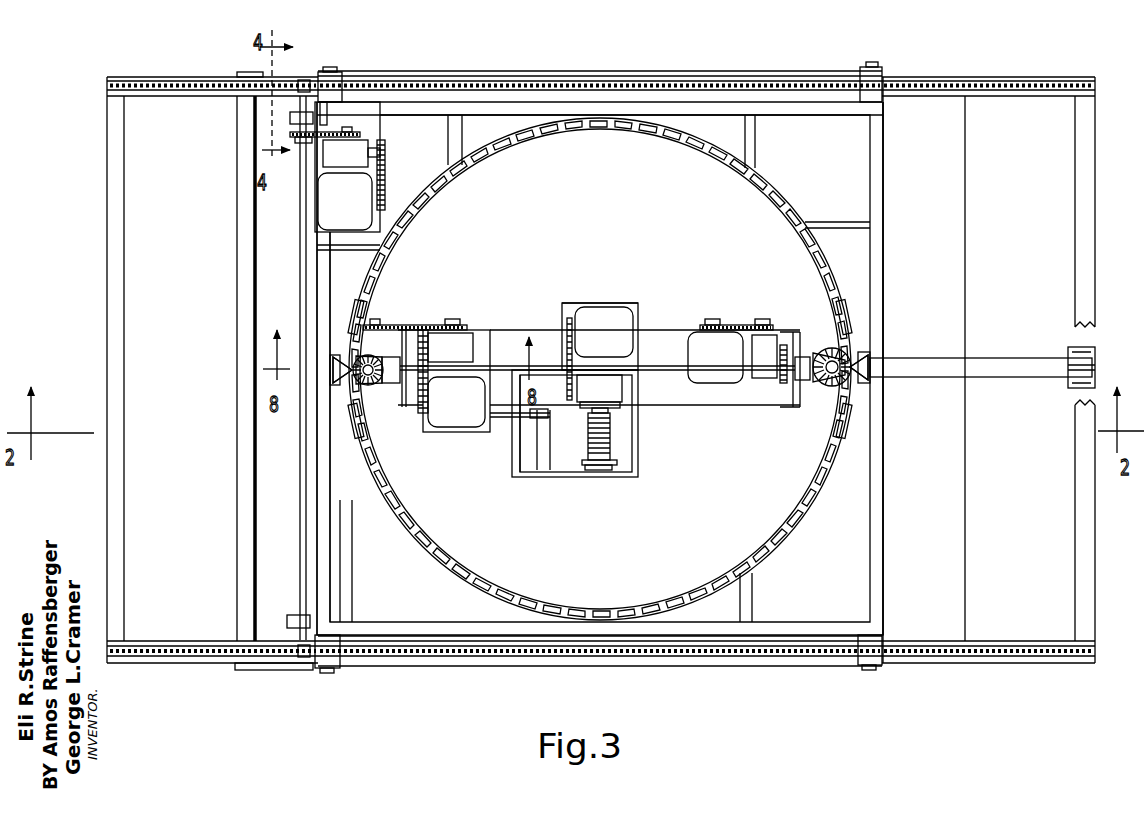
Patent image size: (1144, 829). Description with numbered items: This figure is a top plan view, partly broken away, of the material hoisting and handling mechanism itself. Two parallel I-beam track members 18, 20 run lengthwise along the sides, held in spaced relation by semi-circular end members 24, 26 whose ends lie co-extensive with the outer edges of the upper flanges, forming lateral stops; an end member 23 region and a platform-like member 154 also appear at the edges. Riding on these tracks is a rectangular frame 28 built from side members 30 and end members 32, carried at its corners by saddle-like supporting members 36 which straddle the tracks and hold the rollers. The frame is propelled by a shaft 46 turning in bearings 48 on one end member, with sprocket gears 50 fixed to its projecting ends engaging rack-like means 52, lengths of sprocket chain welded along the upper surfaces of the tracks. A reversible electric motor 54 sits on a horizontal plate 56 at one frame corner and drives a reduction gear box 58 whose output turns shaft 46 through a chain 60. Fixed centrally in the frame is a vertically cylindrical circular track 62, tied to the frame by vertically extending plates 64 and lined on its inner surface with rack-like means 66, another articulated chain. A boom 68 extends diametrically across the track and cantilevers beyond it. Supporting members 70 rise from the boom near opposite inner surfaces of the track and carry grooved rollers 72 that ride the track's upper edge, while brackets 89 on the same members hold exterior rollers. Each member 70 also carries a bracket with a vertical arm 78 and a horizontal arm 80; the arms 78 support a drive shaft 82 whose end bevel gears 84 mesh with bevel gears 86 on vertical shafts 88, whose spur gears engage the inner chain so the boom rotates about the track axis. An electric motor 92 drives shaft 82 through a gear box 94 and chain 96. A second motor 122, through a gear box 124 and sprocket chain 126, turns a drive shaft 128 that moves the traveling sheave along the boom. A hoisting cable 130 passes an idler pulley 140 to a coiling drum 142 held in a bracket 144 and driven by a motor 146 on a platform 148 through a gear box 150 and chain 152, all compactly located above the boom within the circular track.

The track member 18 is at (172, 78).
The track member 20 is at (988, 660).
The wall member 23 is at (252, 345).
The end member 24 is at (113, 150).
The end member 26 is at (1082, 150).
The frame 28 is at (888, 262).
The side member 30 is at (778, 80).
The end member 32 is at (880, 330).
The saddle-like supporting member 36 is at (333, 88).
The shaft 46 is at (307, 452).
The bearing 48 is at (298, 118).
The sprocket gear 50 is at (306, 80).
The rack-like means 52 is at (438, 85).
The electric motor 54 is at (340, 210).
The horizontal plate 56 is at (368, 85).
The reduction gear box 58 is at (335, 155).
The chain 60 is at (345, 137).
The circular track 62 is at (788, 172).
The vertically extending plate 64 is at (455, 140).
The rack-like means 66 is at (722, 132).
The boom 68 is at (982, 362).
The supporting member 70 is at (365, 386).
The roller 72 is at (350, 302).
The vertical arm 78 is at (392, 360).
The horizontal arm 80 is at (165, 645).
The drive shaft 82 is at (660, 365).
The bevel gear 84 is at (400, 356).
The bevel gear 86 is at (392, 378).
The vertical shaft 88 is at (370, 385).
The bracket 89 is at (340, 378).
The electric motor 92 is at (700, 350).
The gear box 94 is at (765, 380).
The chain 96 is at (782, 386).
The electric motor 122 is at (462, 400).
The gear box 124 is at (453, 345).
The sprocket chain 126 is at (424, 333).
The drive shaft 128 is at (376, 325).
The hoisting cable 130 is at (612, 428).
The idler pulley 140 is at (540, 412).
The coiling drum 142 is at (598, 462).
The bracket 144 is at (640, 440).
The electric motor 146 is at (600, 320).
The platform 148 is at (635, 310).
The gear box 150 is at (620, 382).
The chain 152 is at (565, 345).
The upper chain guide 154 is at (657, 322).